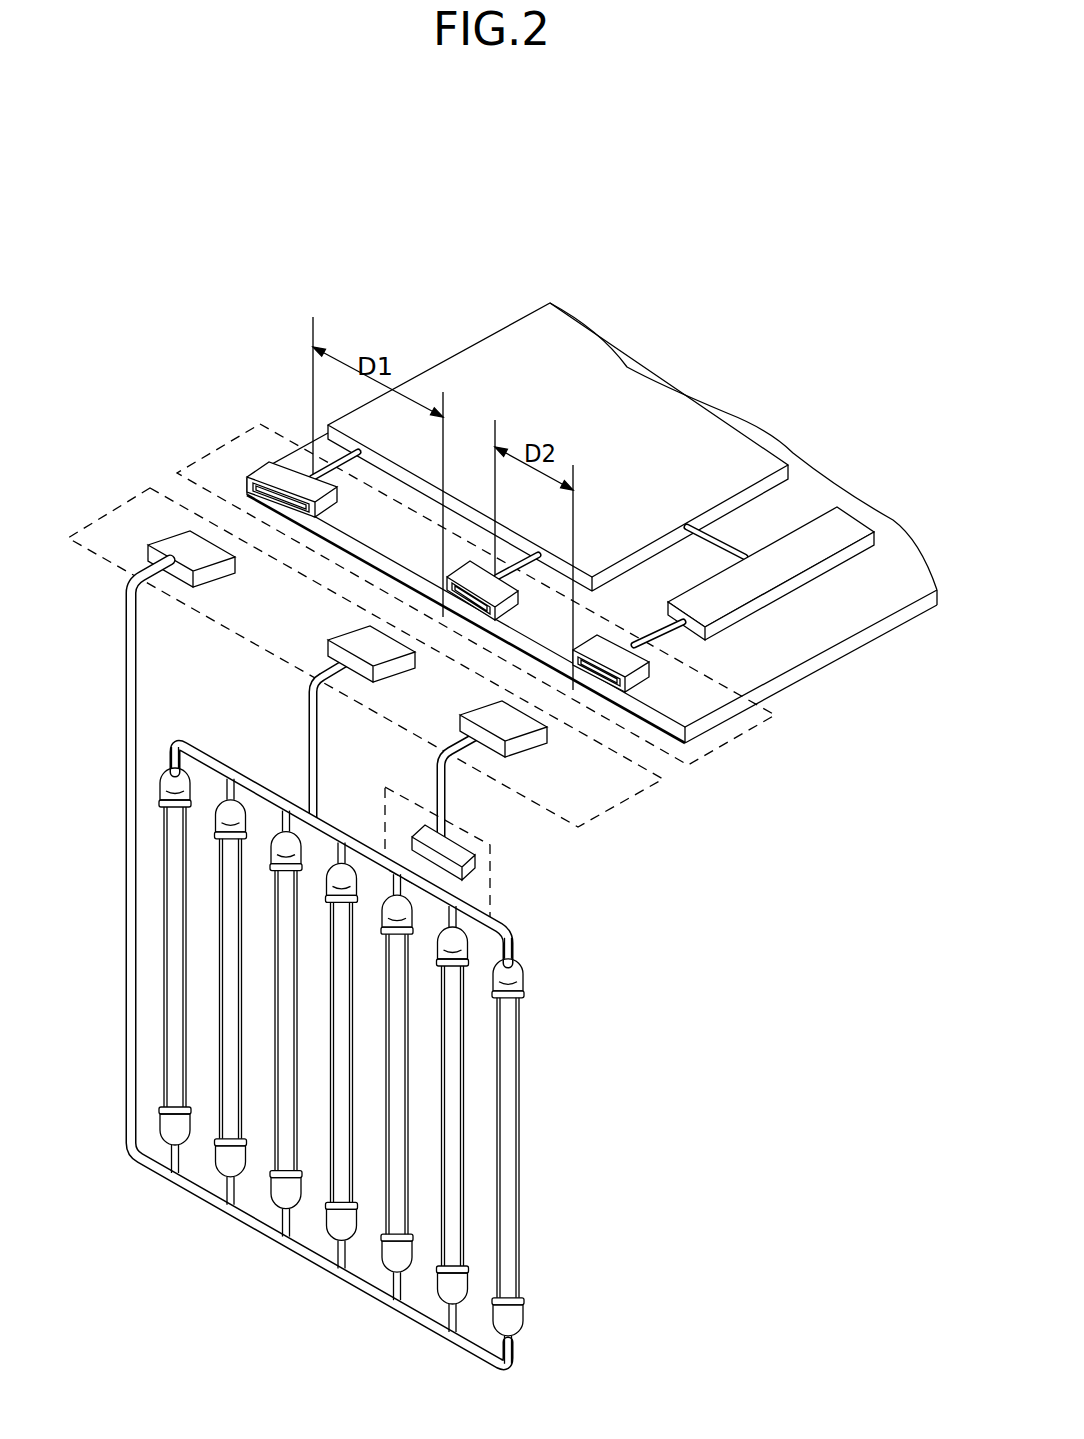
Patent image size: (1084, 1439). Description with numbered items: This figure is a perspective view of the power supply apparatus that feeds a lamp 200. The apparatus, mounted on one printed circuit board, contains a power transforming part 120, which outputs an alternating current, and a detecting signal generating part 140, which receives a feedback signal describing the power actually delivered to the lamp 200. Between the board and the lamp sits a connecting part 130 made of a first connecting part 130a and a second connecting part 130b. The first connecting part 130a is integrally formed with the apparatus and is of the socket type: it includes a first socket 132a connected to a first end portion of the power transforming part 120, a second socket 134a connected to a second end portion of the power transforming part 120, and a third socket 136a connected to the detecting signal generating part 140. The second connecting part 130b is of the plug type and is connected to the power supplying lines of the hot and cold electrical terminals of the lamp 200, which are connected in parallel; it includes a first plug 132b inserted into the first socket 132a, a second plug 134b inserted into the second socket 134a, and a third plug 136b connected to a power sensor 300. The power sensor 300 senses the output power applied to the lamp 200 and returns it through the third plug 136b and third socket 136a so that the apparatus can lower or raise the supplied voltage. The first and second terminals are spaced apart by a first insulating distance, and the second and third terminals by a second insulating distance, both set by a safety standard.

The power transforming part 120 is at (500, 340).
The connecting part 130 is at (830, 798).
The first connecting part 130a is at (733, 743).
The second connecting part 130b is at (637, 797).
The first socket 132a is at (318, 490).
The first plug 132b is at (208, 550).
The second socket 134a is at (501, 590).
The second plug 134b is at (383, 648).
The third socket 136a is at (623, 667).
The third plug 136b is at (513, 723).
The detecting signal generating part 140 is at (778, 573).
The lamp 200 is at (513, 1098).
The power sensor 300 is at (492, 882).